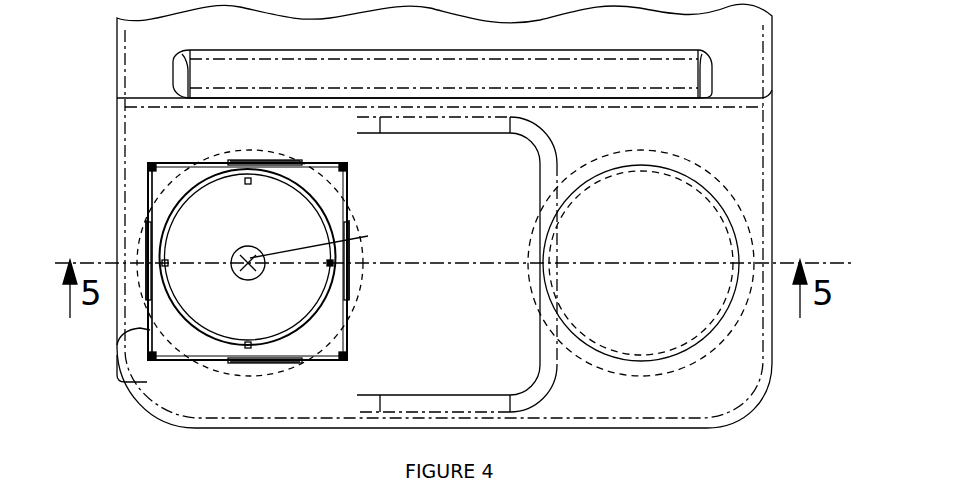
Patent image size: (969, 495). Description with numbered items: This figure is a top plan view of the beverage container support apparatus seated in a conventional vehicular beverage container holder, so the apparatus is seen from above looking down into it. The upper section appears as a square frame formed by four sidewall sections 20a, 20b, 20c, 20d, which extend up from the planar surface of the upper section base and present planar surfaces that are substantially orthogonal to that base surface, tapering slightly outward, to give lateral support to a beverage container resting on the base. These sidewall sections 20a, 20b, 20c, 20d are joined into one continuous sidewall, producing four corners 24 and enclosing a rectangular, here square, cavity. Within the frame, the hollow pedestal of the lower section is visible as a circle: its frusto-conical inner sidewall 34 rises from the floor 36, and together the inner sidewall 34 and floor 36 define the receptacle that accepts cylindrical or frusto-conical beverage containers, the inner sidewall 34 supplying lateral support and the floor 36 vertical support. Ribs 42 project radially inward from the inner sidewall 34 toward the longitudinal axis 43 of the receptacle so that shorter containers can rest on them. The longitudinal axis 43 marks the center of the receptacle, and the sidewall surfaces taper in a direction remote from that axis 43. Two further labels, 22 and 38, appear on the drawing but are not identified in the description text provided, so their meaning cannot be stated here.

The sidewall section 20a is at (197, 362).
The sidewall section 20b is at (345, 212).
The sidewall section 20c is at (163, 165).
The sidewall section 20d is at (117, 360).
The corner members 22 is at (175, 185).
The corner 24 is at (165, 205).
The inner sidewall 34 is at (347, 283).
The floor 36 is at (245, 236).
The frame side wall 38 is at (150, 188).
The rib 42 is at (250, 185).
The longitudinal axis 43 is at (368, 236).